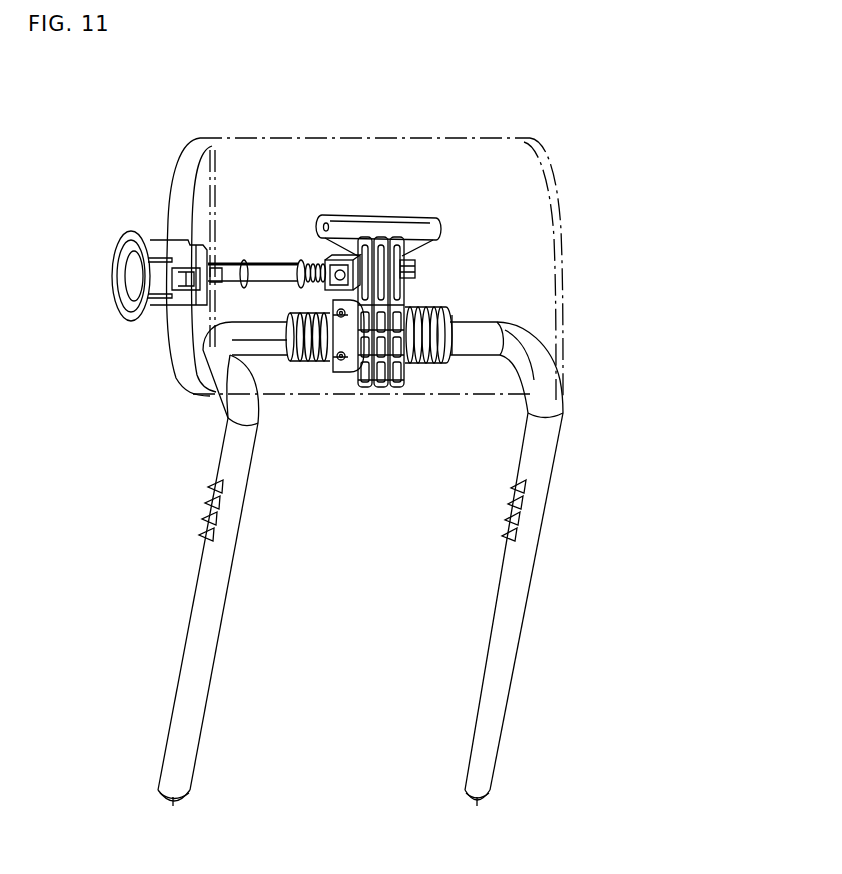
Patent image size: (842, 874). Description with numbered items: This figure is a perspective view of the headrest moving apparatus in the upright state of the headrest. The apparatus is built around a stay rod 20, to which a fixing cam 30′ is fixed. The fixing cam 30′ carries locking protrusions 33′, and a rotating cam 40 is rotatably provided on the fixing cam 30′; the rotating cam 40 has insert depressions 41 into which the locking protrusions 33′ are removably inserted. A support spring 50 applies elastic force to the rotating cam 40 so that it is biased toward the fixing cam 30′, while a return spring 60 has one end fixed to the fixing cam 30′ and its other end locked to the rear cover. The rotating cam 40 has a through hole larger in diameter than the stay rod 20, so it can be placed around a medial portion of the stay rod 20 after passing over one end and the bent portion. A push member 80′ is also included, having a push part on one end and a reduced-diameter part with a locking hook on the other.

The stay rod 20 is at (543, 345).
The fixing cam 30′ is at (443, 352).
The locking protrusions 33′ is at (337, 372).
The rotating cam 40 is at (432, 222).
The insert depressions 41 is at (347, 290).
The support spring 50 is at (433, 312).
The return spring 60 is at (300, 363).
The push member 80′ is at (273, 258).